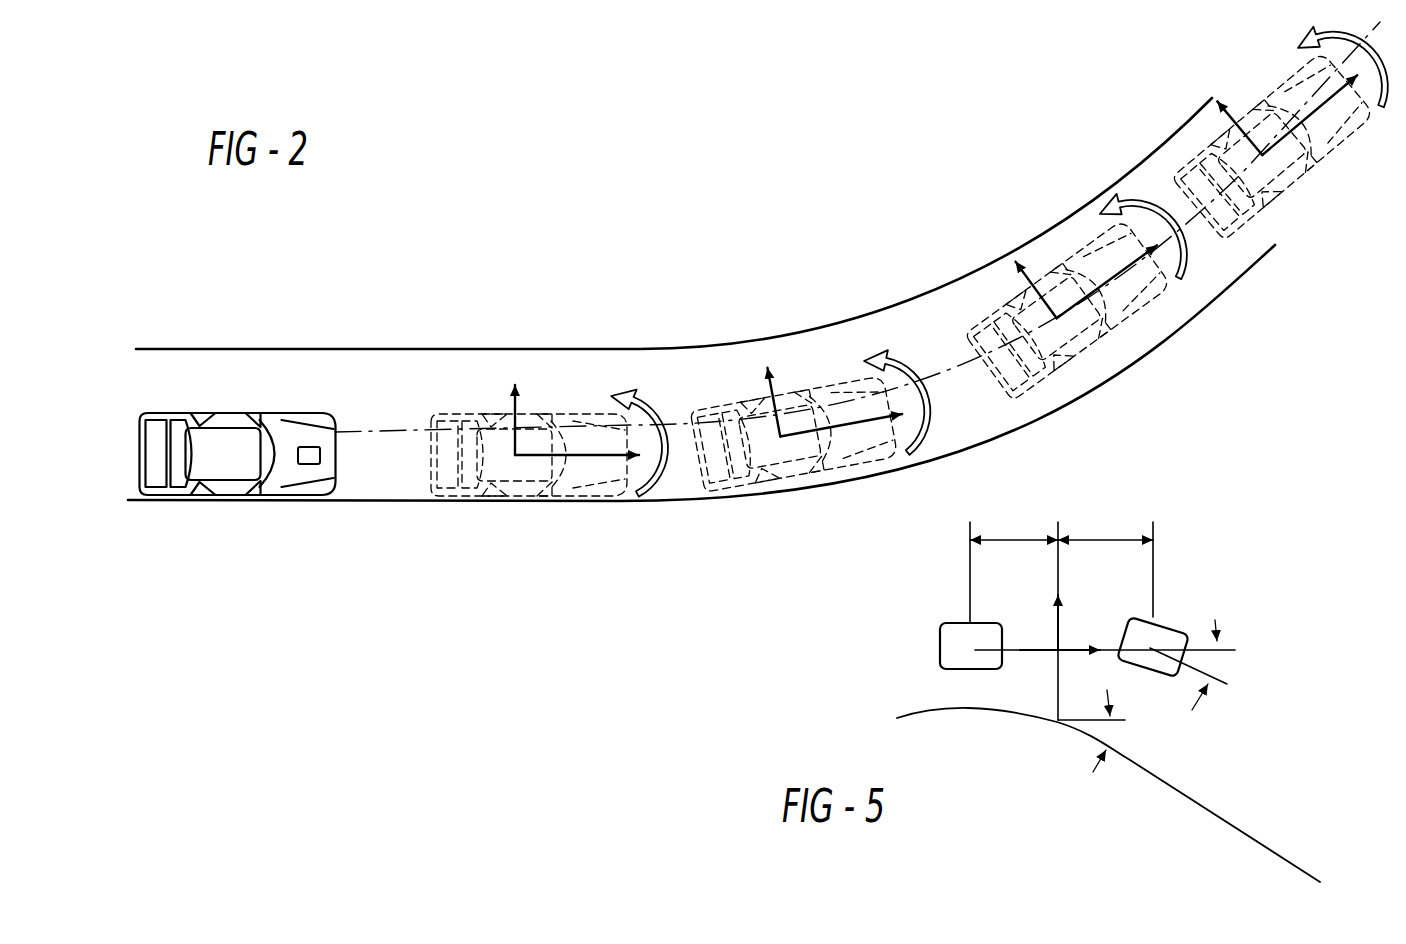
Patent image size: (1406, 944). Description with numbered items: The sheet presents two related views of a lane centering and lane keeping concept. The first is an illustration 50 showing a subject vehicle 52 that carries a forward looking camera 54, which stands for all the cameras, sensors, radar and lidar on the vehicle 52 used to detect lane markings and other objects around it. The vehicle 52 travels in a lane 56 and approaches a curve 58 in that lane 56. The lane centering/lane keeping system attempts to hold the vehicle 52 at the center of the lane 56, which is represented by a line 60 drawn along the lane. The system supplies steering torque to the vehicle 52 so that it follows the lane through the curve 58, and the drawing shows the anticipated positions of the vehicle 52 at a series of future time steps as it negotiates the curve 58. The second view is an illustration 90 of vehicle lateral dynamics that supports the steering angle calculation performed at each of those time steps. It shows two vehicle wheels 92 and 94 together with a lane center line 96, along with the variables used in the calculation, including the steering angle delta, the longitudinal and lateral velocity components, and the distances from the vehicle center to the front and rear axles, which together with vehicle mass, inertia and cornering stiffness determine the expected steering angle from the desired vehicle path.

In FIG. 2, the illustration 50 is at (517, 218).
In FIG. 2, the subject vehicle 52 is at (270, 413).
In FIG. 2, the forward looking camera 54 is at (310, 465).
In FIG. 2, the lane 56 is at (606, 348).
In FIG. 2, the curve 58 is at (1150, 350).
In FIG. 2, the line 60 is at (362, 428).
In FIG. 5, the illustration 90 is at (1197, 547).
In FIG. 5, the vehicle wheel 92 is at (953, 642).
In FIG. 5, the vehicle wheel 94 is at (1157, 637).
In FIG. 5, the lane center line 96 is at (1208, 807).